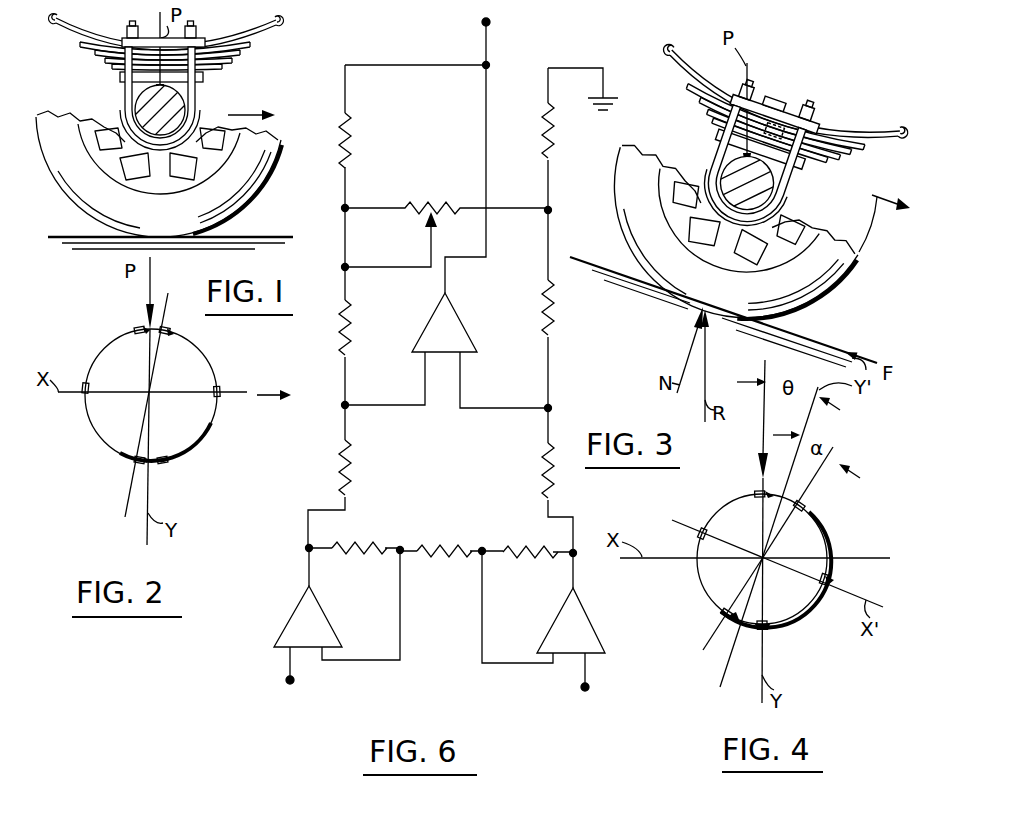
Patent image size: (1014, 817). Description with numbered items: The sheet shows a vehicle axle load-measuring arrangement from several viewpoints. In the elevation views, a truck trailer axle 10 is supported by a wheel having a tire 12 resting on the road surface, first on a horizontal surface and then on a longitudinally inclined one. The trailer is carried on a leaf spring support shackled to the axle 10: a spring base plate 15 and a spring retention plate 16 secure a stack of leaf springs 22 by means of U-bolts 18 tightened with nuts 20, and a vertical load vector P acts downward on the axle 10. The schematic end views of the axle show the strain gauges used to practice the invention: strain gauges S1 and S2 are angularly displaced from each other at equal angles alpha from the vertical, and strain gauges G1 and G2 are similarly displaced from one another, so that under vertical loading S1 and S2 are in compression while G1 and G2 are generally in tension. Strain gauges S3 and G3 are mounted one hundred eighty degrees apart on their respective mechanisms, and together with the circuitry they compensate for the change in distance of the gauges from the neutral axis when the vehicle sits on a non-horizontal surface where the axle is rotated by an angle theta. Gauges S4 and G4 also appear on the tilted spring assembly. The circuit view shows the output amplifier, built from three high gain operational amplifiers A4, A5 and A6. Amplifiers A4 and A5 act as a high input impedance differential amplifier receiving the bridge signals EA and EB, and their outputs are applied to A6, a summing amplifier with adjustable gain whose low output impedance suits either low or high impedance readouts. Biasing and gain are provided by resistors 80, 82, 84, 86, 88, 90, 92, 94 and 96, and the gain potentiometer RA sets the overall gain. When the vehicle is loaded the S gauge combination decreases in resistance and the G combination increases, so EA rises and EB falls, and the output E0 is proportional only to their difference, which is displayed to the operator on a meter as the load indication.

In FIG. 1, the axle 10 is at (140, 112).
In FIG. 3, the axle 10 is at (726, 172).
In FIG. 1, the tire 12 is at (246, 190).
In FIG. 3, the tire 12 is at (842, 284).
In FIG. 1, the spring base plate 15 is at (205, 78).
In FIG. 3, the spring base plate 15 is at (700, 179).
In FIG. 1, the spring retention plate 16 is at (124, 40).
In FIG. 3, the spring retention plate 16 is at (806, 128).
In FIG. 1, the U-bolt 18 is at (193, 114).
In FIG. 3, the U-bolt 18 is at (776, 200).
In FIG. 1, the nut 20 is at (198, 33).
In FIG. 3, the nut 20 is at (738, 99).
In FIG. 1, the leaf spring 22 is at (246, 47).
In FIG. 3, the leaf spring 22 is at (676, 97).
In FIG. 6, the resistor 80 is at (356, 134).
In FIG. 6, the resistor 82 is at (542, 134).
In FIG. 6, the resistor 84 is at (352, 343).
In FIG. 6, the resistor 86 is at (556, 308).
In FIG. 6, the resistor 88 is at (350, 482).
In FIG. 6, the resistor 90 is at (540, 478).
In FIG. 6, the resistor 92 is at (362, 548).
In FIG. 6, the resistor 94 is at (447, 551).
In FIG. 6, the resistor 96 is at (518, 550).
In FIG. 6, the gain potentiometer RA is at (433, 206).
In FIG. 6, the operational amplifier A4 is at (330, 628).
In FIG. 6, the operational amplifier A5 is at (543, 634).
In FIG. 6, the summing amplifier A6 is at (462, 336).
In FIG. 6, the output voltage E0 is at (489, 25).
In FIG. 6, the input voltage EA is at (292, 684).
In FIG. 6, the input voltage EB is at (587, 691).
In FIG. 2, the strain gauge S1 is at (172, 330).
In FIG. 4, the strain gauge S1 is at (806, 506).
In FIG. 2, the strain gauge S2 is at (136, 328).
In FIG. 4, the strain gauge S2 is at (756, 492).
In FIG. 2, the strain gauge S3 is at (82, 393).
In FIG. 4, the strain gauge S3 is at (682, 543).
In FIG. 3, the strain sensor S4 is at (776, 100).
In FIG. 2, the strain gauge G1 is at (132, 461).
In FIG. 4, the strain gauge G1 is at (718, 612).
In FIG. 2, the strain gauge G2 is at (170, 462).
In FIG. 4, the strain gauge G2 is at (770, 628).
In FIG. 2, the strain gauge G3 is at (220, 397).
In FIG. 4, the strain gauge G3 is at (830, 580).
In FIG. 3, the strain gauge G4 is at (762, 118).